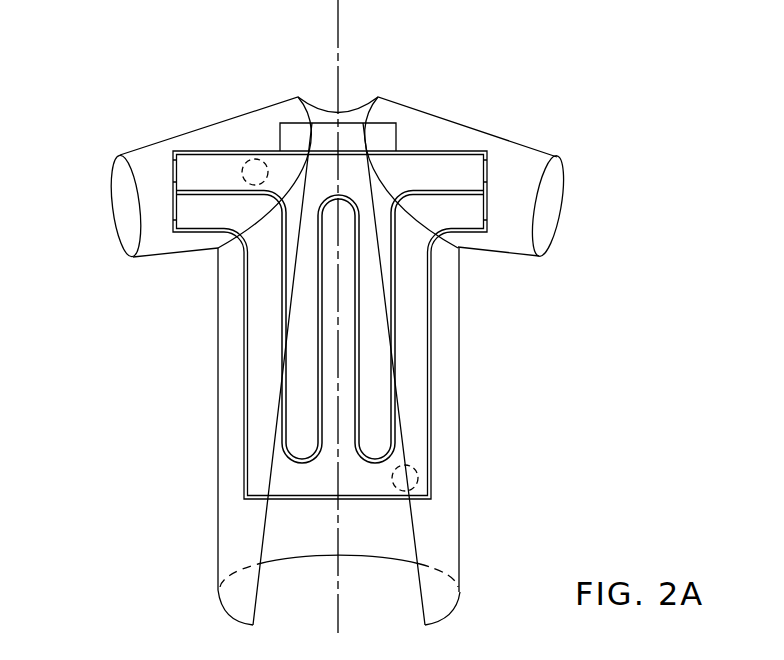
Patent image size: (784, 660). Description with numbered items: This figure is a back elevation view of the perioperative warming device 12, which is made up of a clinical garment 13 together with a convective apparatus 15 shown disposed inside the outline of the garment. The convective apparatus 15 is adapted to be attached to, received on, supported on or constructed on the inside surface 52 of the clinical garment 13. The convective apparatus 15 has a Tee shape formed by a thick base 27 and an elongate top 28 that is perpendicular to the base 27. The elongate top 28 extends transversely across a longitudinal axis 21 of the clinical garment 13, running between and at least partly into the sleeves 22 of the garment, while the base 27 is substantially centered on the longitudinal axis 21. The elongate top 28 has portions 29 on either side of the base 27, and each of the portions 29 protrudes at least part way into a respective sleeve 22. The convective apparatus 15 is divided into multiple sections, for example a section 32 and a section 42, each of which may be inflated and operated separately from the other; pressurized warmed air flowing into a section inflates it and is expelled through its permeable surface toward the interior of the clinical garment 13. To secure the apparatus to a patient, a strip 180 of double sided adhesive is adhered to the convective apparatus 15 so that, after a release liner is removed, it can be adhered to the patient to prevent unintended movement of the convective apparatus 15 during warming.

The perioperative warming device 12 is at (155, 373).
The clinical garment 13 is at (503, 361).
The convective apparatus 15 is at (440, 131).
The longitudinal axis 21 is at (347, 52).
The sleeves 22 is at (162, 258).
The base 27 is at (430, 451).
The elongate top 28 is at (372, 145).
The portions 29 is at (222, 152).
The section 32 is at (245, 396).
The section 42 is at (250, 158).
The inside surface 52 is at (295, 528).
The strip 180 is at (395, 123).